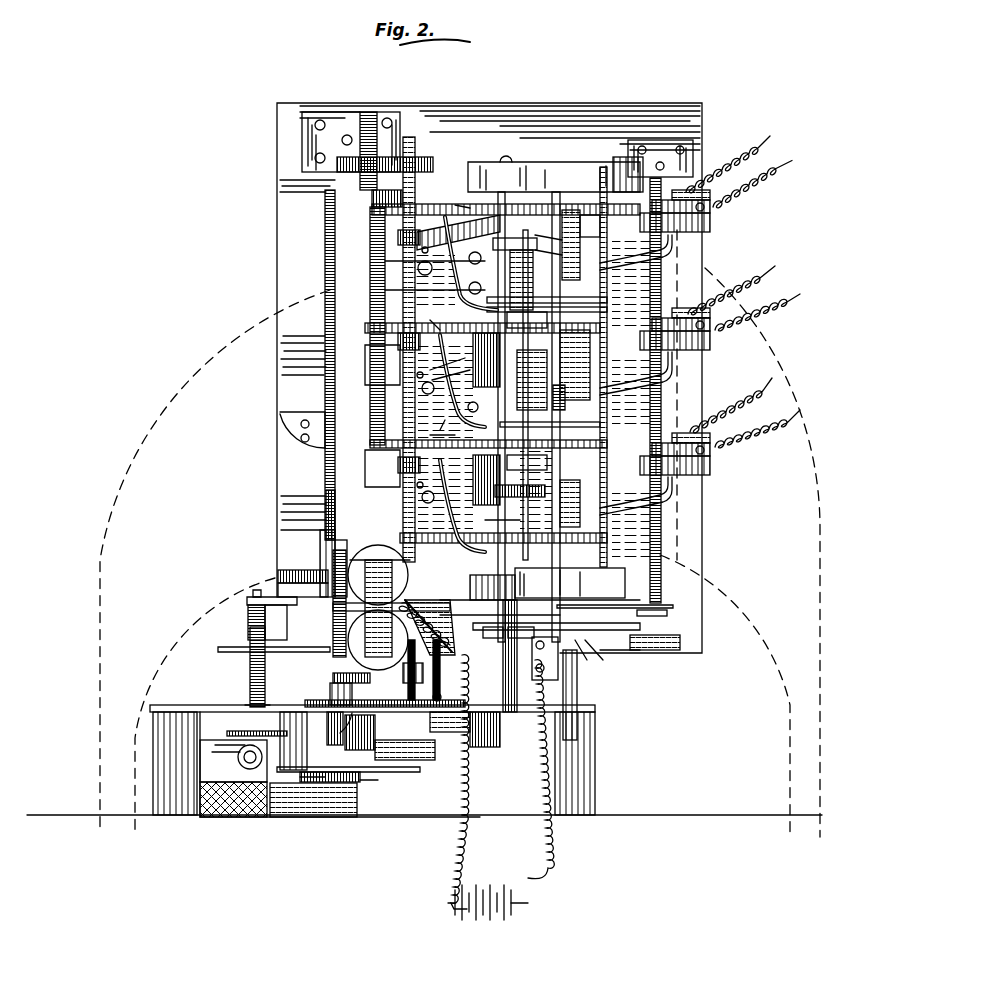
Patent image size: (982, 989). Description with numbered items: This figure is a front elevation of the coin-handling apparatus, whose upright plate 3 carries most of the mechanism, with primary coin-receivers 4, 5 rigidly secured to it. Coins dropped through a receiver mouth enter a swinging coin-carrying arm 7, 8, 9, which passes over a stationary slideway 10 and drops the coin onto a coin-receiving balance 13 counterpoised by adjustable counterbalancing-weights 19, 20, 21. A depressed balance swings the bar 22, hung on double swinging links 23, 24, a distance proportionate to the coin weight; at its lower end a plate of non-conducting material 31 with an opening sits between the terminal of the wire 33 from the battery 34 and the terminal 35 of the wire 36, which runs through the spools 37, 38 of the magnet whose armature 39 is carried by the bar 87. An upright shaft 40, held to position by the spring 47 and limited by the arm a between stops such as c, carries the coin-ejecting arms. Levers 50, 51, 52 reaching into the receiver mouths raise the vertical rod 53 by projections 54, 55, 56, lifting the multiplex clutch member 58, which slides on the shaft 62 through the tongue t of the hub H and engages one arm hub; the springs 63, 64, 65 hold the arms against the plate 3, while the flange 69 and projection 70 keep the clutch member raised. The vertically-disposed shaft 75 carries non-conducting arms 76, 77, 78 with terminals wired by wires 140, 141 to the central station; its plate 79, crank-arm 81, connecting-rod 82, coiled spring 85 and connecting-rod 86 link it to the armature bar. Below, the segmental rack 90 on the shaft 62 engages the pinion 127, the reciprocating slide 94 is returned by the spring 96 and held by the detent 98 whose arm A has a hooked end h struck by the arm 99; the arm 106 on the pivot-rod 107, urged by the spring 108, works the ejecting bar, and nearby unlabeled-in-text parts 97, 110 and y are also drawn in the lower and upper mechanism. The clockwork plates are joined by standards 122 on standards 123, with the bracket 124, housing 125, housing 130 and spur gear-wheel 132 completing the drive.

The plate 3 is at (655, 125).
The primary coin-receiver 4 is at (803, 870).
The primary coin-receiver 5 is at (590, 83).
The coin-carrying arm 7 is at (490, 330).
The coin-carrying arm 8 is at (270, 618).
The coin-carrying arm 9 is at (456, 205).
The stationary slideway 10 is at (145, 745).
The coin-receiving balance 13 is at (800, 288).
The counterbalancing-weight 19 is at (553, 491).
The counterbalancing-weight 20 is at (581, 365).
The counterbalancing-weight 21 is at (568, 245).
The swinging bar 22 is at (512, 395).
The double swinging link 23 is at (491, 522).
The double swinging link 24 is at (500, 277).
The plate of non-conducting material 31 is at (505, 655).
The wire 33 is at (553, 852).
The battery 34 is at (487, 917).
The terminal 35 is at (494, 630).
The wire 36 is at (455, 795).
The spool 37 is at (521, 630).
The spool 38 is at (378, 640).
The armature 39 is at (370, 601).
The upright shaft 40 is at (527, 361).
The spring 47 is at (640, 655).
The lever 50 is at (481, 503).
The lever 51 is at (458, 380).
The lever 52 is at (475, 235).
The vertical rod 53 is at (415, 160).
The projection 54 is at (399, 466).
The projection 55 is at (402, 352).
The projection 56 is at (402, 237).
The multiplex clutch member 58 is at (330, 232).
The shaft 62 is at (365, 110).
The spring 63 is at (440, 420).
The spring 64 is at (440, 298).
The spring 65 is at (385, 268).
The flange 69 is at (298, 412).
The projection 70 is at (290, 436).
The vertically-disposed shaft 75 is at (660, 548).
The arm 76 is at (718, 446).
The arm 77 is at (712, 340).
The arm 78 is at (712, 222).
The plate 79 is at (685, 636).
The crank-arm 81 is at (655, 612).
The connecting-rod 82 is at (620, 606).
The coiled spring 85 is at (547, 584).
The connecting-rod 86 is at (430, 627).
The bar 87 is at (445, 582).
The segmental rack 90 is at (324, 740).
The reciprocating slide 94 is at (248, 799).
The spring 96 is at (237, 752).
The bar 97 is at (325, 784).
The detent 98 is at (289, 741).
The arm 99 is at (378, 770).
The arm 106 is at (248, 612).
The pivot-rod 107 is at (255, 597).
The spring 108 is at (266, 680).
The block 110 is at (305, 585).
The standard 122 is at (577, 695).
The standard 123 is at (165, 725).
The bracket 124 is at (405, 760).
The segmentally-formed piece 125 is at (471, 756).
The pinion 127 is at (314, 800).
The housing 130 is at (332, 688).
The spur gear-wheel 132 is at (320, 700).
The wire 140 is at (762, 184).
The wire 141 is at (743, 150).
The arm a is at (599, 662).
The stop c is at (584, 662).
The hooked end h is at (422, 768).
The tongue t is at (322, 510).
The hub H is at (320, 545).
The arm A is at (372, 775).
The bar y is at (318, 780).